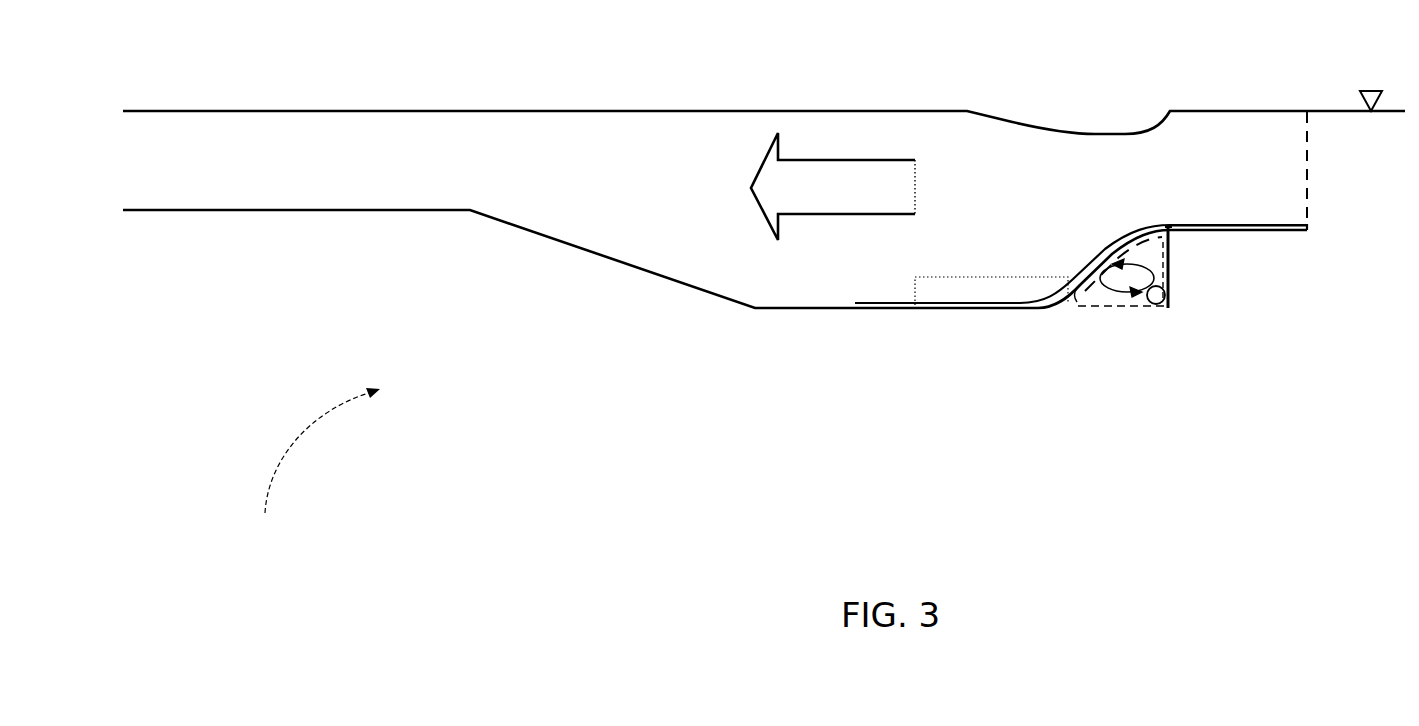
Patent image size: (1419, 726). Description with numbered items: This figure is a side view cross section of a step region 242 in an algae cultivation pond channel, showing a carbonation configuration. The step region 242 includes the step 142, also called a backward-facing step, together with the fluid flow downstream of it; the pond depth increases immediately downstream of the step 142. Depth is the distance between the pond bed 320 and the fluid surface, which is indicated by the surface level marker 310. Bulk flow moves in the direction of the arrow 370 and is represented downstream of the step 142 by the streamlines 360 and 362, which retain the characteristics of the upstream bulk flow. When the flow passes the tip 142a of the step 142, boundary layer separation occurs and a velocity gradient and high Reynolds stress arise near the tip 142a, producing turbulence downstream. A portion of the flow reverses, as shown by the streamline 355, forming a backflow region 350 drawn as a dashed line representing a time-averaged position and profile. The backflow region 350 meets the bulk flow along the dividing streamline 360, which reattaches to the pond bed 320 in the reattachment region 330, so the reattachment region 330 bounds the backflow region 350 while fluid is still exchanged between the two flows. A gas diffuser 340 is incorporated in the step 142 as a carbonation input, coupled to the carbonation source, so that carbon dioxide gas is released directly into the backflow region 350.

The surface level marker 310 is at (1364, 106).
The pond bed 320 is at (776, 310).
The reattachment region 330 is at (966, 277).
The gas diffuser 340 is at (1162, 302).
The backflow region 350 is at (1113, 302).
The streamline 355 is at (1128, 273).
The dividing streamline 360 is at (1103, 256).
The streamline 362 is at (1150, 234).
The arrow 370 is at (815, 216).
The step 142 is at (1172, 272).
The tip of the step 142a is at (1172, 234).
The step region 242 is at (302, 465).